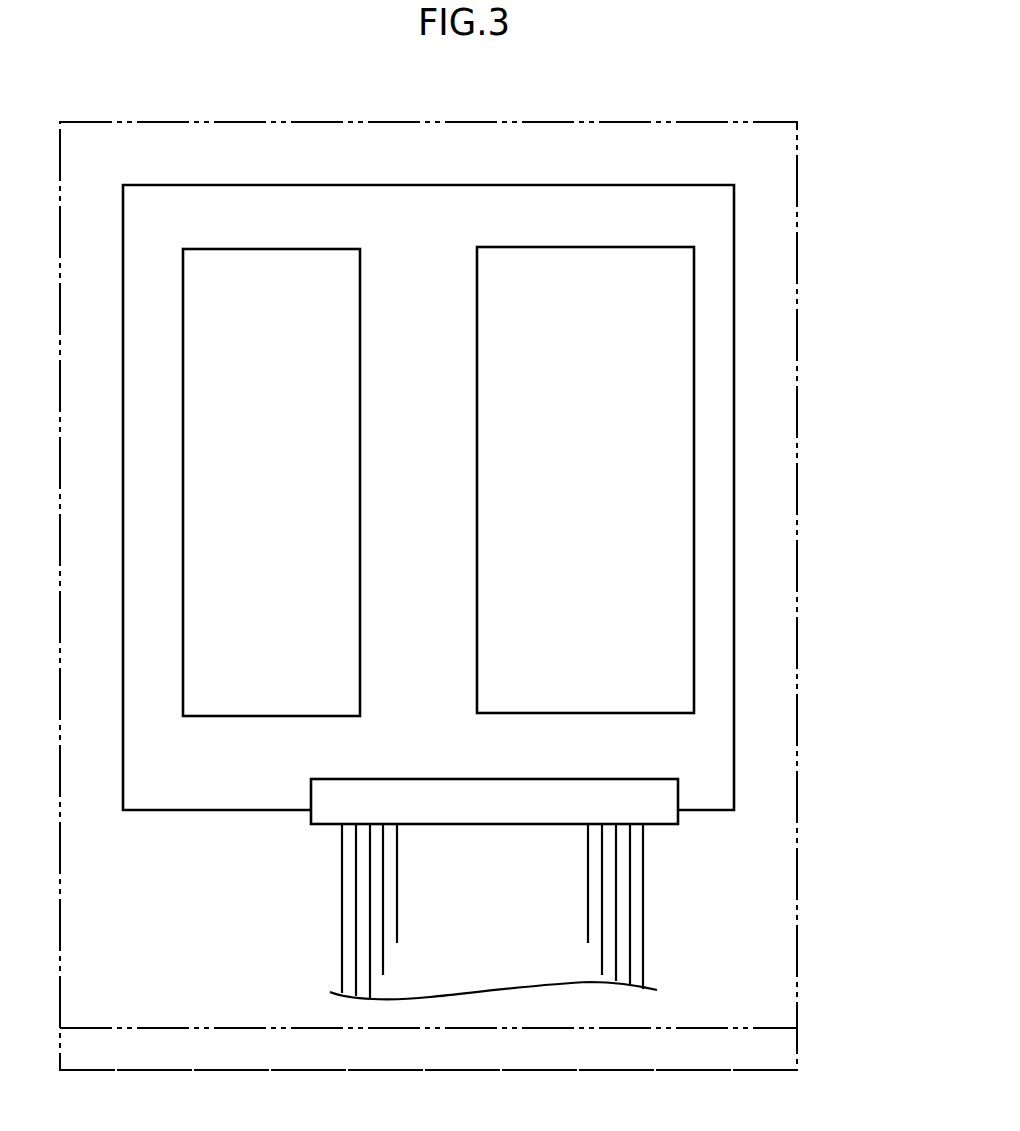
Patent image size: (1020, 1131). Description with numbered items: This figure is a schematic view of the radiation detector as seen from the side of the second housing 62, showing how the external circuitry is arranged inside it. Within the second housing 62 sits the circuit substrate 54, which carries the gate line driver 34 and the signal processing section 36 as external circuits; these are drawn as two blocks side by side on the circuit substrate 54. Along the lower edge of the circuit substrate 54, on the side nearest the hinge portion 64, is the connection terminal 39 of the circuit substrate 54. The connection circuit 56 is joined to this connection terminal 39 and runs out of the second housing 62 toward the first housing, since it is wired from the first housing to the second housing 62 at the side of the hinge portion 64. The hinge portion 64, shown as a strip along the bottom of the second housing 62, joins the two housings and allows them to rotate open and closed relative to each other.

The second housing 62 is at (783, 259).
The hinge portion 64 is at (785, 1051).
The circuit substrate 54 is at (721, 494).
The gate line driver 34 is at (350, 640).
The signal processing section 36 is at (490, 440).
The connection terminal 39 is at (333, 818).
The connection circuit 56 is at (638, 931).